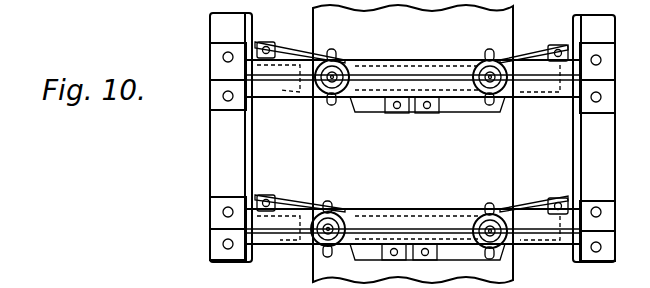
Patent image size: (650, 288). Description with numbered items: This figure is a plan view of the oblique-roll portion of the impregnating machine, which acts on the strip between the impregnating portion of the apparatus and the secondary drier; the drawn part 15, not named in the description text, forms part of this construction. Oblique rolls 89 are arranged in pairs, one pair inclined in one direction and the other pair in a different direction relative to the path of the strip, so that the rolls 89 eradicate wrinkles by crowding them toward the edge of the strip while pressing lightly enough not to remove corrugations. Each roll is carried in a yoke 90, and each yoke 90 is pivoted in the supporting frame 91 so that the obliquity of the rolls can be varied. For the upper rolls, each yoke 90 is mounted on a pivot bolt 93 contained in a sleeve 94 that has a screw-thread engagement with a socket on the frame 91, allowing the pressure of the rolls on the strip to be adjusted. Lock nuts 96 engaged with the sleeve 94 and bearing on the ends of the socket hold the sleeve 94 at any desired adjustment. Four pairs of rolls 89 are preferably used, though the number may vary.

The frame plate 15 is at (413, 144).
The oblique rolls 89 is at (455, 100).
The yokes 90 is at (430, 100).
The supporting frame 91 is at (545, 99).
The pivot bolt 93 is at (489, 58).
The sleeve 94 is at (335, 97).
The lock nuts 96 is at (520, 60).